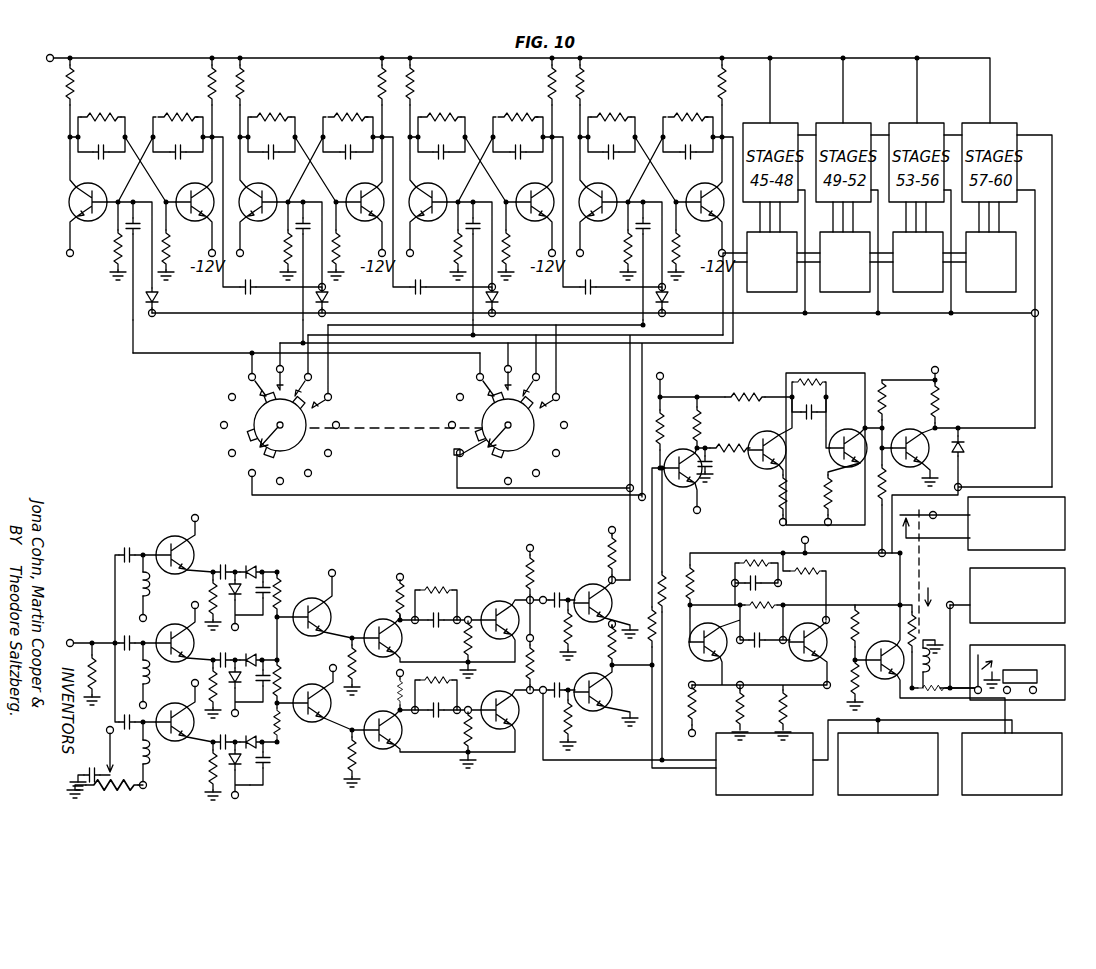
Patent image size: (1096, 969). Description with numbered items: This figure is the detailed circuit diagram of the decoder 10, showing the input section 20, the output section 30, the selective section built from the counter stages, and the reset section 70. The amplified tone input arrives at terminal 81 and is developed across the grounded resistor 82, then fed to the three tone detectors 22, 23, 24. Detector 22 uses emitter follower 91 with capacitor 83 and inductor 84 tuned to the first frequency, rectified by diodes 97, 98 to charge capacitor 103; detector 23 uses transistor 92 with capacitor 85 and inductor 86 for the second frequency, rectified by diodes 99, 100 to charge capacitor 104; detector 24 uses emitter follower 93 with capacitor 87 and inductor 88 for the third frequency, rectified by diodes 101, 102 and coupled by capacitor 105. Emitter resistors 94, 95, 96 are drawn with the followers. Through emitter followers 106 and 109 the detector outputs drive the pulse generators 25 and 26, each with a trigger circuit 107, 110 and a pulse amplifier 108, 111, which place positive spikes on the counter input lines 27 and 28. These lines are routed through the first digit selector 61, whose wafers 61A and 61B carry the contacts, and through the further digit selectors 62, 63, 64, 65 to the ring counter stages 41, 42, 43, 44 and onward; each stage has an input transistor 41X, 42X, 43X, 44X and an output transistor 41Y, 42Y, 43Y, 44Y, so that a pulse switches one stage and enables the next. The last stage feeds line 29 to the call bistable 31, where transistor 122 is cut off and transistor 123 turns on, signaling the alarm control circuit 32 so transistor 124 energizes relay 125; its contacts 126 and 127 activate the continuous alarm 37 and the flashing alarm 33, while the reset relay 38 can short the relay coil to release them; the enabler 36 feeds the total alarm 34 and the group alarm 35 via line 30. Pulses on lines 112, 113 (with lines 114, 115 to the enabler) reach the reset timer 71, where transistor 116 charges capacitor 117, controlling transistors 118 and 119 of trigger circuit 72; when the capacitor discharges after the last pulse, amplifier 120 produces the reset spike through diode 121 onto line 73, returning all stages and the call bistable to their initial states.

The decoder 10 is at (49, 140).
The input section 20 is at (133, 513).
The tone detector 22 is at (202, 544).
The tone detector 23 is at (168, 618).
The tone detector 24 is at (172, 705).
The pulse generator 25 is at (490, 574).
The pulse generator 26 is at (434, 756).
The counter input line 27 is at (630, 398).
The counter input line 28 is at (642, 421).
The counter output line 29 is at (1040, 135).
The output section 30 is at (654, 779).
The call bistable circuit 31 is at (749, 550).
The alarm control circuit 32 is at (892, 601).
The flashing alarm 33 is at (968, 567).
The total alarm 34 is at (940, 770).
The group alarm 35 is at (1055, 718).
The enabler 36 is at (816, 778).
The continuous alarm device 37 is at (967, 503).
The reset relay 38 is at (1000, 640).
The counter stage 41 is at (143, 104).
The transistor 41X is at (106, 184).
The transistor 41Y is at (201, 184).
The counter stage 42 is at (313, 109).
The transistor 42X is at (276, 184).
The transistor 42Y is at (371, 184).
The counter stage 43 is at (488, 109).
The transistor 43X is at (446, 184).
The transistor 43Y is at (541, 184).
The counter stage 44 is at (655, 109).
The transistor 44X is at (616, 184).
The transistor 44Y is at (711, 184).
The selector switch 61 is at (388, 410).
The selector switch 61A is at (210, 431).
The selector switch 61B is at (446, 429).
The selector switch 62 is at (757, 295).
The selector switch 63 is at (830, 295).
The selector switch 64 is at (903, 295).
The selector switch 65 is at (976, 295).
The reset section 70 is at (933, 364).
The reset timer 71 is at (681, 449).
The trigger circuit 72 is at (846, 389).
The reset line 73 is at (1035, 388).
The input terminal 81 is at (86, 652).
The grounded resistor 82 is at (111, 640).
The capacitor 83 is at (122, 549).
The inductor 84 is at (151, 586).
The capacitor 85 is at (135, 620).
The inductor 86 is at (138, 665).
The capacitor 87 is at (127, 717).
The inductor 88 is at (150, 760).
The emitter follower transistor 91 is at (166, 543).
The transistor 92 is at (182, 656).
The emitter follower transistor 93 is at (185, 735).
The emitter resistor 94 is at (210, 577).
The emitter resistor 95 is at (210, 665).
The emitter resistor 96 is at (210, 764).
The diode 97 is at (249, 602).
The diode 98 is at (254, 566).
The diode 99 is at (249, 689).
The diode 100 is at (242, 652).
The diode 101 is at (280, 742).
The diode 102 is at (275, 788).
The capacitor 103 is at (278, 574).
The capacitor 104 is at (279, 662).
The capacitor 105 is at (278, 765).
The emitter follower 106 is at (341, 616).
The trigger circuit 107 is at (455, 594).
The pulse amplifier 108 is at (592, 585).
The emitter follower 109 is at (340, 721).
The trigger circuit 110 is at (454, 726).
The pulse amplifier 111 is at (591, 728).
The line 112 is at (653, 656).
The line 113 is at (657, 622).
The enabler input line 114 is at (697, 760).
The enabler input line 115 is at (704, 770).
The transistor 116 is at (684, 488).
The capacitor 117 is at (712, 492).
The transistor 118 is at (768, 470).
The transistor 119 is at (848, 460).
The amplifier 120 is at (908, 460).
The diode 121 is at (960, 442).
The transistor 122 is at (708, 653).
The transistor 123 is at (807, 653).
The transistor 124 is at (888, 642).
The relay 125 is at (906, 681).
The relay contact 126 is at (960, 598).
The relay contact 127 is at (935, 571).